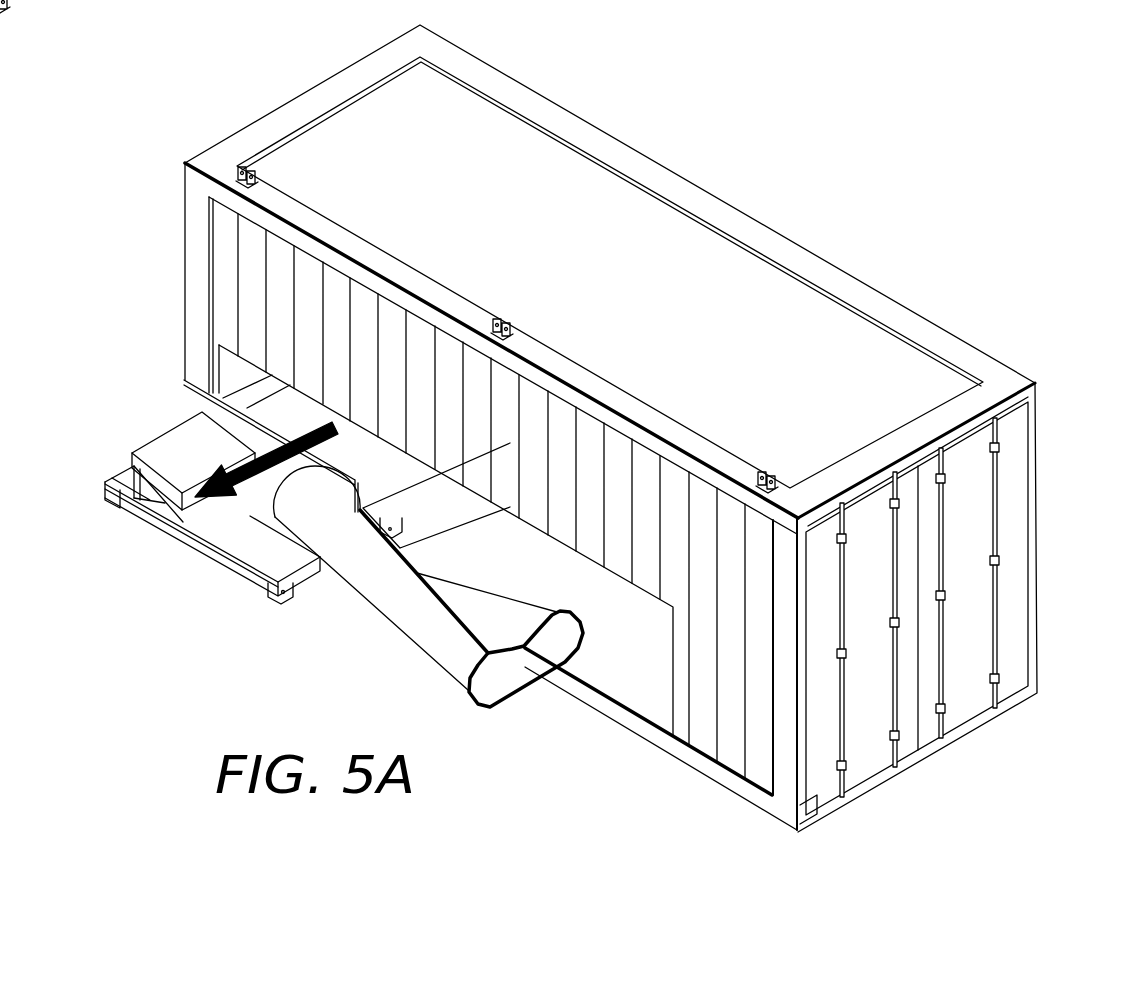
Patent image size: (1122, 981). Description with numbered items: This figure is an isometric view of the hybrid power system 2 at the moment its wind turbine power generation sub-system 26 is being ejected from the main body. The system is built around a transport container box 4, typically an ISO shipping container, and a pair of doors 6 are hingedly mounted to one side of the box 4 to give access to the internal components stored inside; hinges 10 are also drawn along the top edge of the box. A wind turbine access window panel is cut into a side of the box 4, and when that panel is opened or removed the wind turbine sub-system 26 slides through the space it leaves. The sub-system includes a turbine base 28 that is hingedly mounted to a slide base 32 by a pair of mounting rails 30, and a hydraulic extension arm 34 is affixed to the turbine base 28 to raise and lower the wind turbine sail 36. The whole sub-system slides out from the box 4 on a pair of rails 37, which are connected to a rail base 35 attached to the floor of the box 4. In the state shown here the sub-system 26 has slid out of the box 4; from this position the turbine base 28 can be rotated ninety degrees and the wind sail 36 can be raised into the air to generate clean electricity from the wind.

The hybrid power system 2 is at (1000, 218).
The transport container box 4 is at (1040, 374).
The doors 6 is at (877, 588).
The hinges 10 is at (254, 168).
The wind turbine power generation sub-system 26 is at (275, 670).
The turbine base 28 is at (180, 428).
The mounting rails 30 is at (118, 482).
The slide base 32 is at (195, 550).
The hydraulic extension arm 34 is at (274, 524).
The rail base 35 is at (435, 520).
The wind turbine sail 36 is at (520, 683).
The rails 37 is at (268, 592).